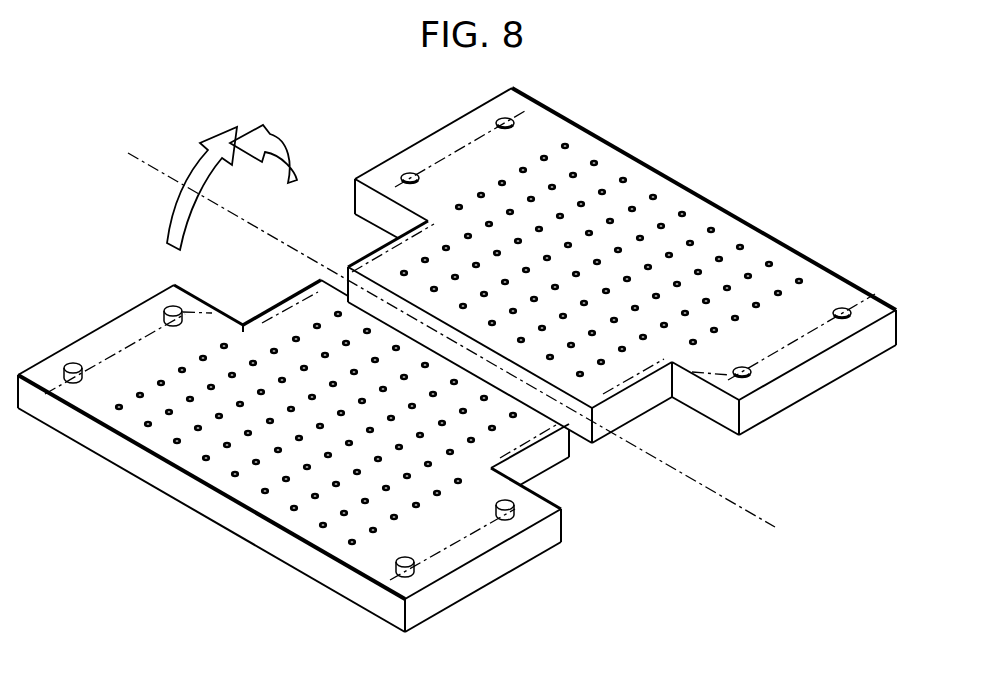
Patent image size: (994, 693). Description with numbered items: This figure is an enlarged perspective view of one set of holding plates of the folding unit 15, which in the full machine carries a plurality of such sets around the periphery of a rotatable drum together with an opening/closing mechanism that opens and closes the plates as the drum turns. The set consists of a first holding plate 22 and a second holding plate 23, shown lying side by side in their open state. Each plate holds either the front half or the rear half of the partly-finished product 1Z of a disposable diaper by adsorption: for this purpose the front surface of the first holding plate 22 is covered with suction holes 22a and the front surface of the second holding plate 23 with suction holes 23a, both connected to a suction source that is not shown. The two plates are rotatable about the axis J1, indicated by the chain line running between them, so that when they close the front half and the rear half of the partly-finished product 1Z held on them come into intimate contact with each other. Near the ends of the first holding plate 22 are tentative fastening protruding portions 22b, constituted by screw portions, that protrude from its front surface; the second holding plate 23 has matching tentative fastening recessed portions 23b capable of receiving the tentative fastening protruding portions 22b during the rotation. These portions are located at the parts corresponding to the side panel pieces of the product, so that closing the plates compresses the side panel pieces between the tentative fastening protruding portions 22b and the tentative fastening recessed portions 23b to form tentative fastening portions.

The folding unit 15 is at (477, 353).
The first holding plate 22 is at (293, 448).
The suction holes 22a is at (222, 443).
The tentative fastening protruding portions 22b is at (73, 363).
The second holding plate 23 is at (642, 262).
The suction holes 23a is at (660, 225).
The tentative fastening recessed portions 23b is at (410, 173).
The axis J1 is at (763, 500).
The partly-finished product 1Z is at (823, 333).